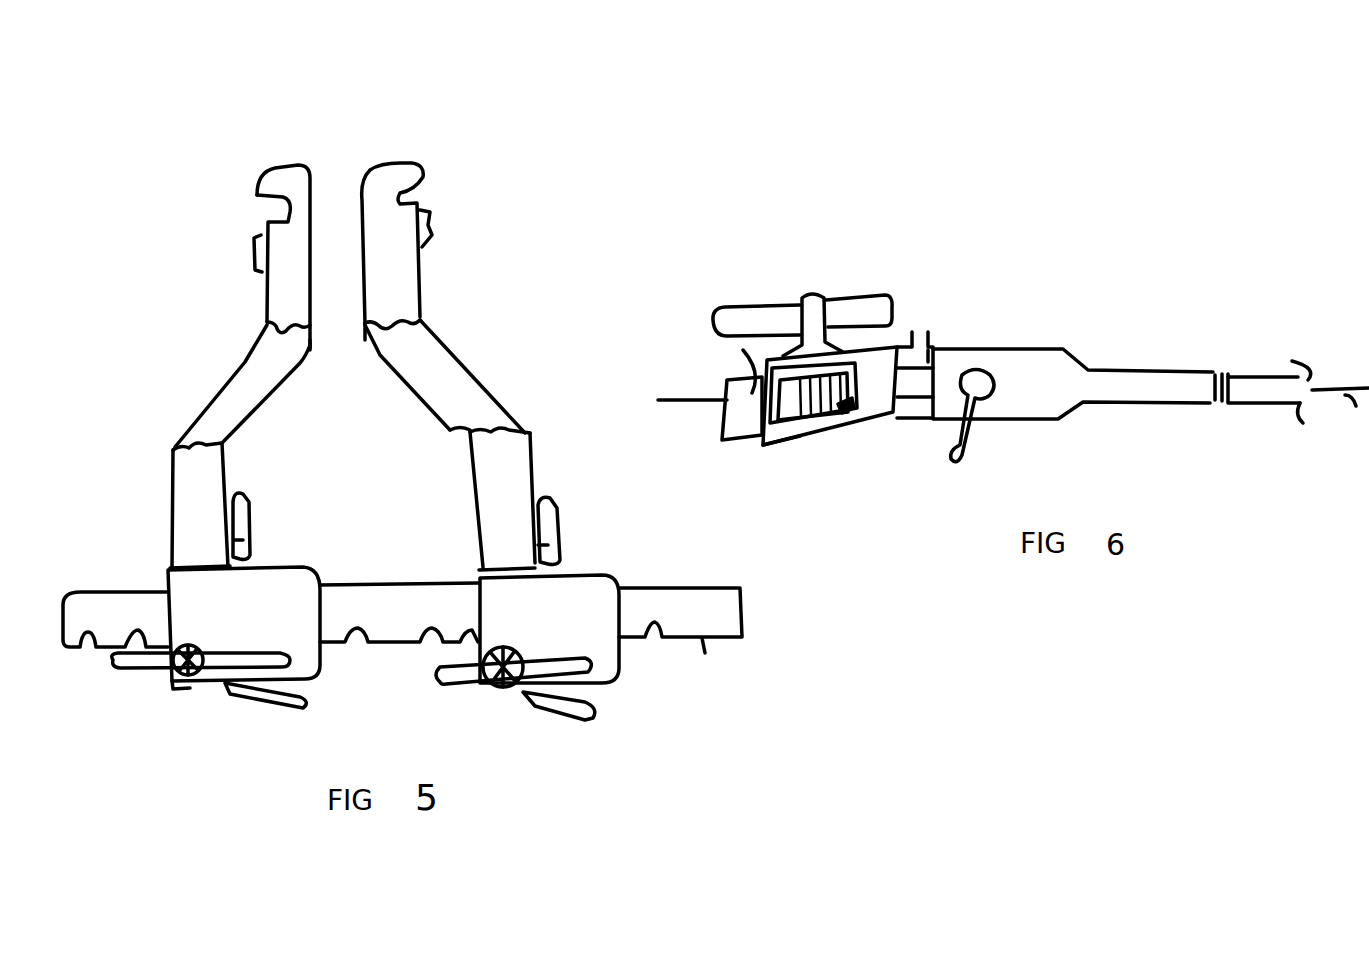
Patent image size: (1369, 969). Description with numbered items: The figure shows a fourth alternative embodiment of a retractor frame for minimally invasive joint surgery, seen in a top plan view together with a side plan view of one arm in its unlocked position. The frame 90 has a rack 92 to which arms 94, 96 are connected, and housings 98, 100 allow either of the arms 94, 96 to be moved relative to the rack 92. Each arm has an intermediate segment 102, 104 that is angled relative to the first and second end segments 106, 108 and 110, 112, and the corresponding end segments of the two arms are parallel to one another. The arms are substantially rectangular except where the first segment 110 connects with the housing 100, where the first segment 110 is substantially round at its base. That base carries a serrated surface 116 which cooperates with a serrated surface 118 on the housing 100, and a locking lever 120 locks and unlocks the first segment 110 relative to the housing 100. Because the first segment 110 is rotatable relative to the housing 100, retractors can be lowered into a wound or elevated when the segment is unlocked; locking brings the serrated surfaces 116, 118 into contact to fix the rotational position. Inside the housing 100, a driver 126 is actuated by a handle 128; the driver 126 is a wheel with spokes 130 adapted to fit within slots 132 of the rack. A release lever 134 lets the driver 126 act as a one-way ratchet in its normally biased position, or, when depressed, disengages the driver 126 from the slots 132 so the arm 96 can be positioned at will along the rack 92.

In FIG. 5, the frame 90 is at (349, 138).
In FIG. 5, the rack 92 is at (699, 625).
In FIG. 5, the arm 94 is at (298, 418).
In FIG. 5, the arm 96 is at (436, 433).
In FIG. 5, the housing 98 is at (298, 624).
In FIG. 5, the housing 100 is at (598, 623).
In FIG. 6, the housing 100 is at (828, 422).
In FIG. 5, the intermediate segment 102 is at (260, 387).
In FIG. 5, the intermediate segment 104 is at (450, 362).
In FIG. 6, the intermediate segment 104 is at (1260, 378).
In FIG. 5, the first end segment 106 is at (190, 490).
In FIG. 5, the second end segment 108 is at (297, 258).
In FIG. 5, the first segment 110 is at (517, 465).
In FIG. 6, the first segment 110 is at (1035, 358).
In FIG. 5, the second end segment 112 is at (412, 280).
In FIG. 6, the serrated surface 116 is at (930, 345).
In FIG. 6, the serrated surface 118 is at (917, 345).
In FIG. 6, the locking lever 120 is at (968, 452).
In FIG. 6, the driver 126 is at (853, 388).
In FIG. 6, the handle 128 is at (850, 310).
In FIG. 6, the spokes 130 is at (805, 422).
In FIG. 5, the slots 132 is at (653, 638).
In FIG. 5, the release lever 134 is at (580, 717).
In FIG. 6, the release lever 134 is at (737, 429).